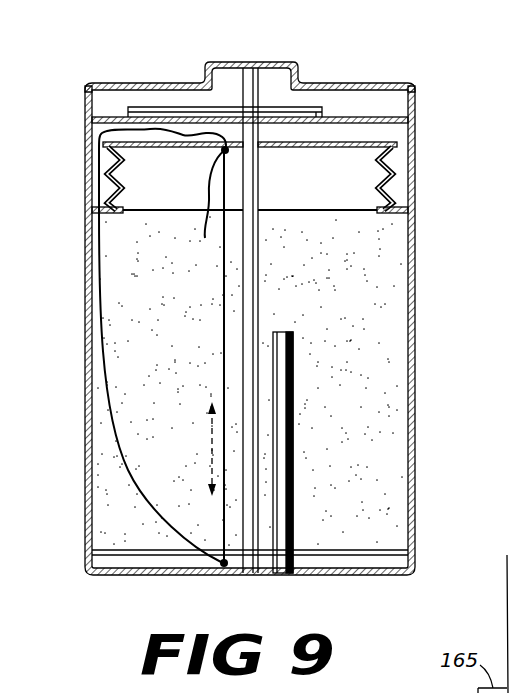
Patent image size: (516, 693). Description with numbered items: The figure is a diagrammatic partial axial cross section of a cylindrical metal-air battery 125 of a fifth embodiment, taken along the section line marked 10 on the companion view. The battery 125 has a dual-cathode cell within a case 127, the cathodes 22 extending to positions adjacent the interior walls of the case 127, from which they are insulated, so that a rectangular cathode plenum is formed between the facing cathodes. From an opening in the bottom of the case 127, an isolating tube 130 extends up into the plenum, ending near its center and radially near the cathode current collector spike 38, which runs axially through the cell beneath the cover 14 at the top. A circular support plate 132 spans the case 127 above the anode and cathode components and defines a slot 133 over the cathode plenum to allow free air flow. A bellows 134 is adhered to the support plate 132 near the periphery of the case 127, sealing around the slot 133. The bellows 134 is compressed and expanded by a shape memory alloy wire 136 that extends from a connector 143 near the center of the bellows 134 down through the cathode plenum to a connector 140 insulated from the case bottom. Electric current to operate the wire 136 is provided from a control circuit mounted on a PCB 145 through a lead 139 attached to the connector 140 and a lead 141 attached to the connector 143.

The battery 125 is at (398, 60).
The case 127 is at (417, 423).
The cover 14 is at (275, 62).
The PCB 145 is at (307, 113).
The lead 141 is at (200, 117).
The cathode current collector spike 38 is at (255, 272).
The bellows 134 is at (396, 197).
The support plate 132 is at (386, 213).
The slot 133 is at (300, 210).
The cathodes 22 is at (360, 367).
The isolating tube 130 is at (282, 424).
The shape memory alloy wire 136 is at (223, 376).
The lead 139 is at (108, 282).
The connector 143 is at (205, 235).
The connector 140 is at (226, 562).
The section line 10- 10 is at (48, 270).